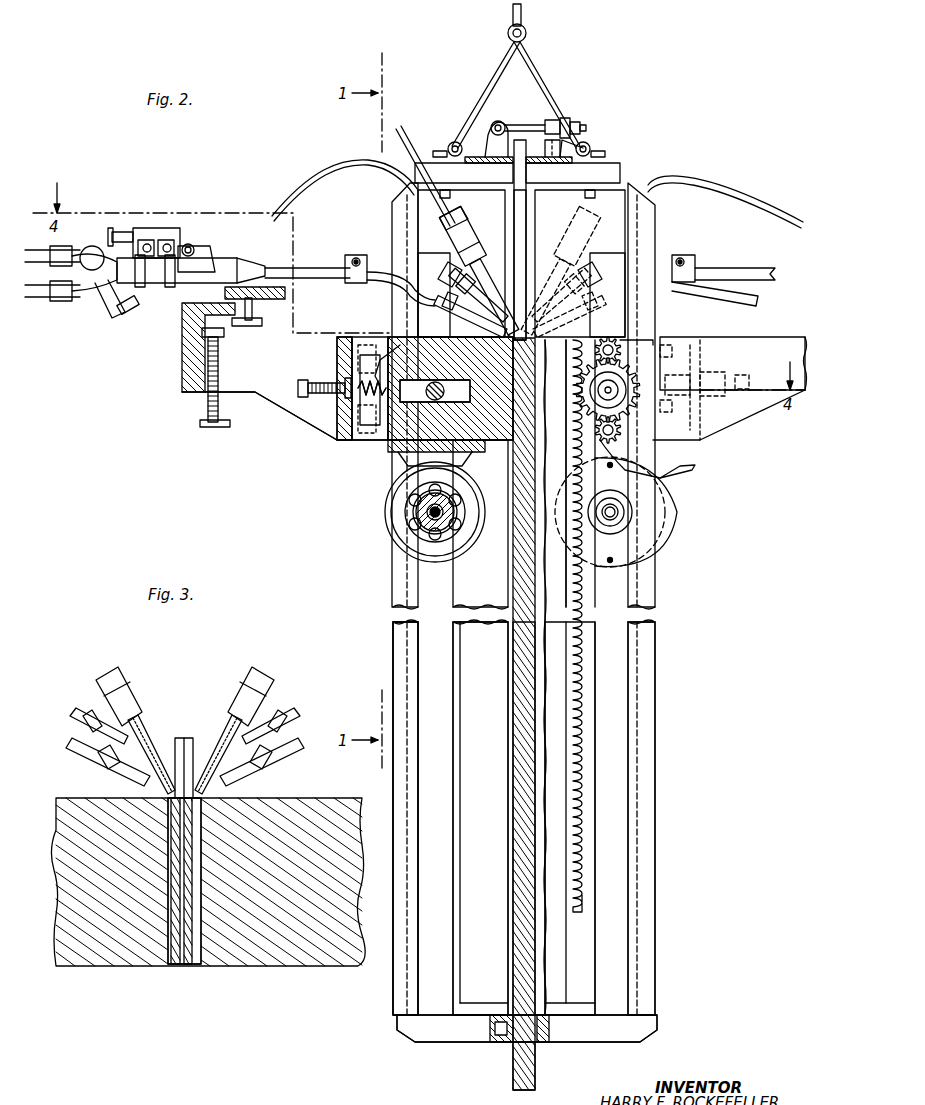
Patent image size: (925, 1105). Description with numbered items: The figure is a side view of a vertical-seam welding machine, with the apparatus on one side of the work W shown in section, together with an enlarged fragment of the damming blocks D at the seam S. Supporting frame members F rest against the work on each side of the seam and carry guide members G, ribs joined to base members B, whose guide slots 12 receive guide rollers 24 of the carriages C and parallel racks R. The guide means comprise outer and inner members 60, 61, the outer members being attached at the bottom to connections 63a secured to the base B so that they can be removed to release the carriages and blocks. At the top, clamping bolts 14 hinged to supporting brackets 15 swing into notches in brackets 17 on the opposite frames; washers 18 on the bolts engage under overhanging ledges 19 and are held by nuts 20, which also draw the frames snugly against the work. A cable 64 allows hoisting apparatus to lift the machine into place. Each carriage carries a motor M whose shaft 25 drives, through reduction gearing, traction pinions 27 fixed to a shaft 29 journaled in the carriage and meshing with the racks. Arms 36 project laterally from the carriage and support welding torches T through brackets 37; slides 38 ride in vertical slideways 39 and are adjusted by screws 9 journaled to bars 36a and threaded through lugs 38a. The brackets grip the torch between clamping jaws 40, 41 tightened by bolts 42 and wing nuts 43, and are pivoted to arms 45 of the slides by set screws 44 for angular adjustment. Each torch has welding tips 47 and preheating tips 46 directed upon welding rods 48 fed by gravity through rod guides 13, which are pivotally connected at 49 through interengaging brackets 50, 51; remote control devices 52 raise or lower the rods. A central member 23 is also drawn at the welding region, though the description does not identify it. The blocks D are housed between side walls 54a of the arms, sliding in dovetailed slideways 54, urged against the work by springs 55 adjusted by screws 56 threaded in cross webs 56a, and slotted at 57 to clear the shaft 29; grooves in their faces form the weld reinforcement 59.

In FIG. 2, the screw 9 is at (218, 403).
In FIG. 2, the guide slot 12 is at (640, 268).
In FIG. 2, the rod guide 13 is at (478, 252).
In FIG. 3, the rod guide 13 is at (240, 682).
In FIG. 2, the clamping bolt 14 is at (522, 123).
In FIG. 2, the supporting bracket 15 is at (490, 125).
In FIG. 2, the bracket 17 is at (575, 148).
In FIG. 2, the washer 18 is at (566, 120).
In FIG. 2, the overhanging ledge 19 is at (552, 120).
In FIG. 2, the nut 20 is at (580, 126).
In FIG. 2, the guide rod 23 is at (528, 290).
In FIG. 2, the guide roller 24 is at (412, 345).
In FIG. 2, the motor shaft 25 is at (427, 514).
In FIG. 2, the traction pinion 27 is at (630, 375).
In FIG. 2, the shaft 29 is at (612, 390).
In FIG. 2, the arm 36 is at (285, 412).
In FIG. 2, the bar 36a is at (218, 338).
In FIG. 2, the bracket 37 is at (350, 295).
In FIG. 2, the slide 38 is at (182, 378).
In FIG. 2, the lug 38a is at (204, 402).
In FIG. 2, the slideway 39 is at (182, 357).
In FIG. 2, the clamping jaw 40 is at (210, 256).
In FIG. 2, the clamping jaw 41 is at (353, 260).
In FIG. 2, the bolt 42 is at (190, 245).
In FIG. 2, the wing nut 43 is at (195, 252).
In FIG. 2, the set screw 44 is at (258, 328).
In FIG. 2, the arm 45 is at (249, 320).
In FIG. 2, the preheating tip 46 is at (495, 285).
In FIG. 3, the preheating tip 46 is at (86, 716).
In FIG. 2, the welding tip 47 is at (470, 325).
In FIG. 3, the welding tip 47 is at (118, 768).
In FIG. 2, the welding rod 48 is at (402, 140).
In FIG. 3, the welding rod 48 is at (215, 750).
In FIG. 2, the pivotal connection 49 is at (448, 270).
In FIG. 2, the bracket 50 is at (674, 302).
In FIG. 2, the bracket 51 is at (466, 230).
In FIG. 2, the remote control device 52 is at (305, 195).
In FIG. 2, the slideway 54 is at (343, 348).
In FIG. 2, the side wall 54a is at (353, 420).
In FIG. 2, the spring 55 is at (372, 412).
In FIG. 2, the screw 56 is at (305, 380).
In FIG. 2, the cross web 56a is at (346, 413).
In FIG. 2, the slot 57 is at (430, 511).
In FIG. 2, the reinforcement 59 is at (515, 735).
In FIG. 2, the outer member 60 is at (405, 680).
In FIG. 2, the inner member 61 is at (455, 645).
In FIG. 2, the connection 63a is at (432, 1030).
In FIG. 2, the cable 64 is at (535, 78).
In FIG. 2, the base member B is at (512, 948).
In FIG. 2, the carriage C is at (315, 514).
In FIG. 2, the damming block D is at (466, 455).
In FIG. 3, the damming block D is at (128, 966).
In FIG. 2, the supporting frame member F is at (485, 1000).
In FIG. 2, the guide member G is at (400, 916).
In FIG. 2, the motor M is at (393, 535).
In FIG. 2, the rack R is at (580, 748).
In FIG. 2, the seam S is at (515, 910).
In FIG. 3, the seam S is at (220, 966).
In FIG. 2, the welding torch T is at (272, 266).
In FIG. 2, the work W is at (540, 1082).
In FIG. 3, the work W is at (186, 966).